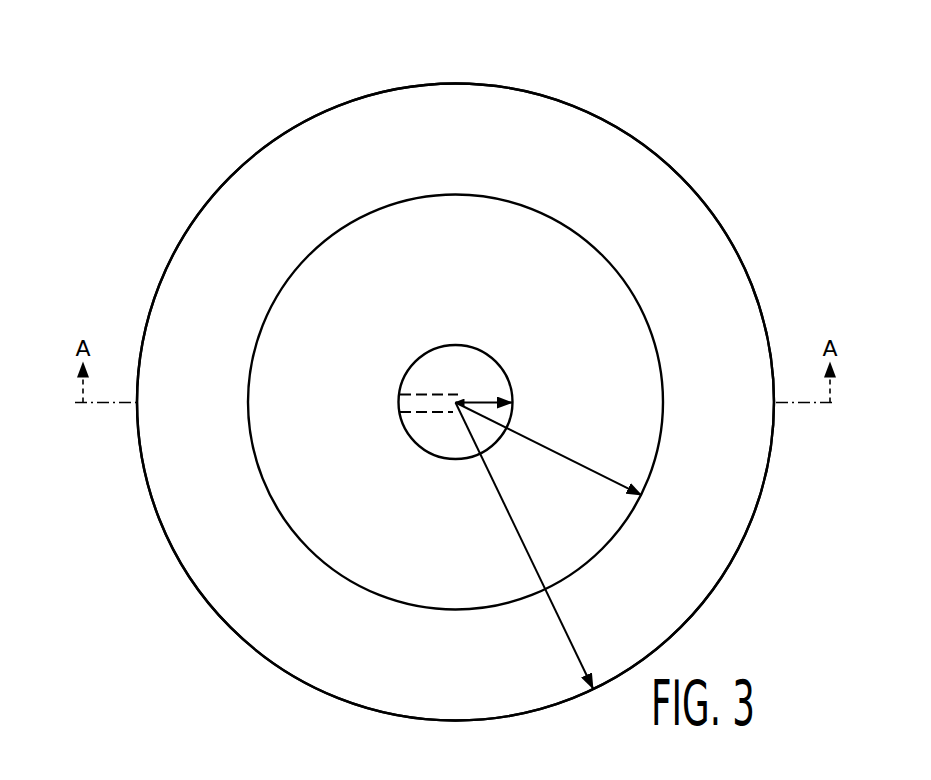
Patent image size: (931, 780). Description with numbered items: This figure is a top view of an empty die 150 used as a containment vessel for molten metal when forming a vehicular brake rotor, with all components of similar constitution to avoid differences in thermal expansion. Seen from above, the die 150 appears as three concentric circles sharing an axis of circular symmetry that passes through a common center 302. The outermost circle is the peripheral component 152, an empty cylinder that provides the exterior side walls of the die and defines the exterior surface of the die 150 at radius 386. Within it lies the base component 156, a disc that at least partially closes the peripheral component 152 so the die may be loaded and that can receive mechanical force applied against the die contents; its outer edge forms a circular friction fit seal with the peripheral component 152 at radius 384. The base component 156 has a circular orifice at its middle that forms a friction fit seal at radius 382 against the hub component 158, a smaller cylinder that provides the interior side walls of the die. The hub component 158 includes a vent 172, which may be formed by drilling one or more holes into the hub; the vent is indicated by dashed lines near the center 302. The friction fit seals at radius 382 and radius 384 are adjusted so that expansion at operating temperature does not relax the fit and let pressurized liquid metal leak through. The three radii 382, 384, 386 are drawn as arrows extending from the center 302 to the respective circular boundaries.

The die 150 is at (210, 100).
The peripheral component 152 is at (210, 607).
The base component 156 is at (257, 470).
The hub component 158 is at (425, 355).
The vent 172 is at (433, 417).
The center 302 is at (468, 413).
The radius 382 is at (487, 400).
The radius 384 is at (575, 462).
The radius 386 is at (502, 500).